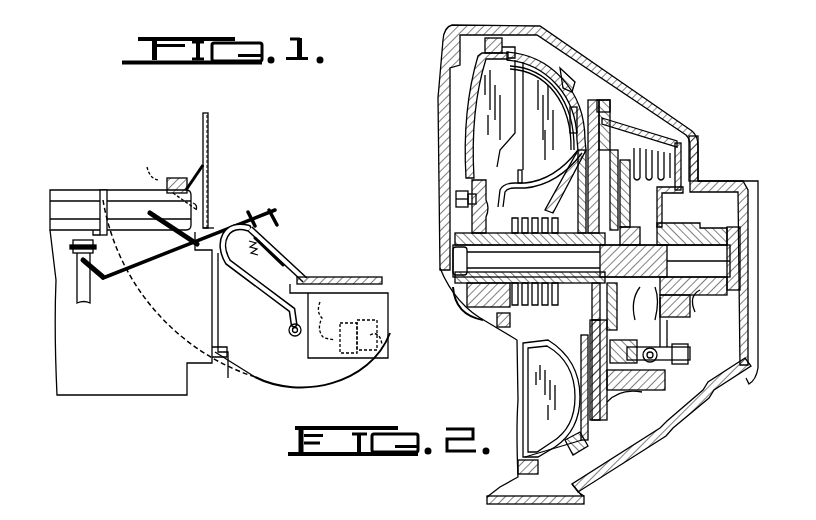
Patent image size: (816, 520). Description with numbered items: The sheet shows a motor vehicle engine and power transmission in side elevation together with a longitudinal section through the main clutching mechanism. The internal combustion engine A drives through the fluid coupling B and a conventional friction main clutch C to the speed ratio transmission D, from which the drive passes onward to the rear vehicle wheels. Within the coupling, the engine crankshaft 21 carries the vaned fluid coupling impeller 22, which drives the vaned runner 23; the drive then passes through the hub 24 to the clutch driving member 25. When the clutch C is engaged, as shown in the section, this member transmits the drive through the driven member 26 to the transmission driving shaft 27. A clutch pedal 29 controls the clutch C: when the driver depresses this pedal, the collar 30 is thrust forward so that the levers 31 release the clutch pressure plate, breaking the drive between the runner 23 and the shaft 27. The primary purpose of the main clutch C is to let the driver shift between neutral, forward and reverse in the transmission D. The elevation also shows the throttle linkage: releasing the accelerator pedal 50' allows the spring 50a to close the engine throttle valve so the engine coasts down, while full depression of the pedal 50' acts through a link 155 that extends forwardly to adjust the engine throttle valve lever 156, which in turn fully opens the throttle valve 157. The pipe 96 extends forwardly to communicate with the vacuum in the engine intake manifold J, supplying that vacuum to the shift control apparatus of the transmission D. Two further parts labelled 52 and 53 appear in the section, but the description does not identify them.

In FIG. 1, the engine intake manifold J is at (80, 236).
In FIG. 1, the throttle valve 157 is at (72, 262).
In FIG. 1, the engine throttle valve lever 156 is at (80, 283).
In FIG. 1, the link 155 is at (118, 280).
In FIG. 1, the accelerator pedal 50' is at (256, 200).
In FIG. 1, the clutch pedal 29 is at (275, 212).
In FIG. 1, the spring 50a is at (276, 250).
In FIG. 1, the speed ratio transmission D is at (380, 292).
In FIG. 1, the internal combustion engine A is at (122, 388).
In FIG. 1, the pipe 96 is at (263, 380).
In FIG. 2, the fluid coupling B is at (547, 62).
In FIG. 2, the vaned fluid coupling impeller 22 is at (465, 100).
In FIG. 2, the vaned runner 23 is at (557, 73).
In FIG. 2, the engine crankshaft 21 is at (458, 225).
In FIG. 2, the hub 24 is at (540, 263).
In FIG. 2, the clutch driving member 25 is at (627, 100).
In FIG. 2, the friction main clutch C is at (622, 113).
In FIG. 2, the clutch wall 52 is at (660, 140).
In FIG. 2, the housing wall 53 is at (686, 130).
In FIG. 2, the driven member 26 is at (620, 200).
In FIG. 2, the transmission driving shaft 27 is at (720, 260).
In FIG. 2, the collar 30 is at (690, 300).
In FIG. 2, the levers 31 is at (680, 328).